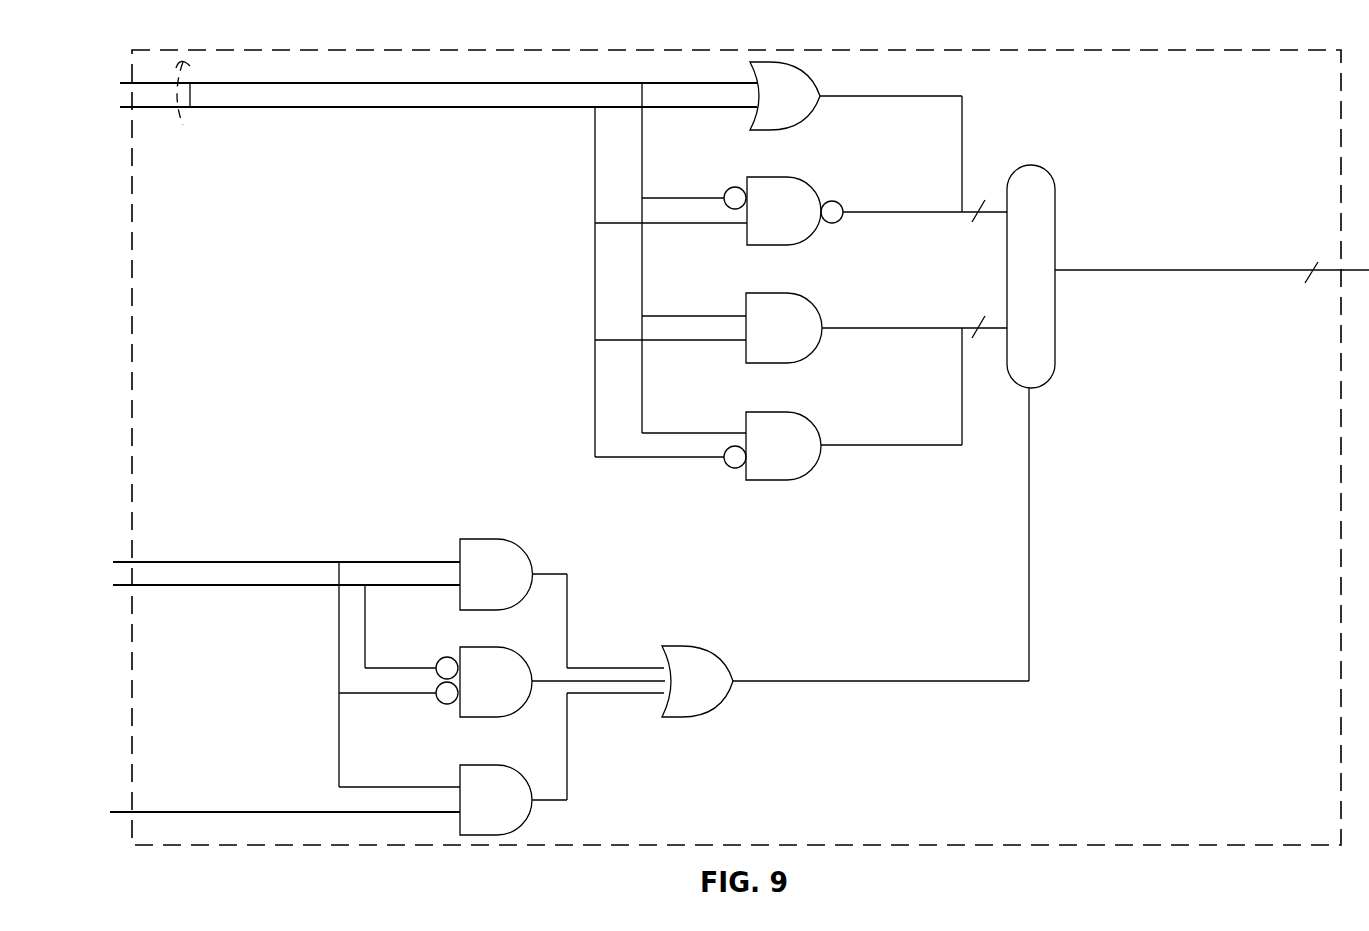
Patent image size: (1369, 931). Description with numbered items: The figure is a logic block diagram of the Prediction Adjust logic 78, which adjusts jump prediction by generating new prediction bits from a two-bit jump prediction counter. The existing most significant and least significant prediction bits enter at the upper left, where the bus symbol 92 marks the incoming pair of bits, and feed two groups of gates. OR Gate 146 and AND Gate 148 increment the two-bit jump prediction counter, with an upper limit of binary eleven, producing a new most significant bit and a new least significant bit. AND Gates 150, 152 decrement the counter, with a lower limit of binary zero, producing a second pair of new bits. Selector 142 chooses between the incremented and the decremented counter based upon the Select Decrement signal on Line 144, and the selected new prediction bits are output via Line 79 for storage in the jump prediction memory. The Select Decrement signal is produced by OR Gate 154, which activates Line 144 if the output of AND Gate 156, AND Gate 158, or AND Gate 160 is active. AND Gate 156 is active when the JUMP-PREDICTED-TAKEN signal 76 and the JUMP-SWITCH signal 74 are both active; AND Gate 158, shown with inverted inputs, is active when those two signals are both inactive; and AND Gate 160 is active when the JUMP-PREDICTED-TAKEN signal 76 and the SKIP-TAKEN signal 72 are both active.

The Prediction Adjust logic 78 is at (131, 166).
The prediction bit bus 92 is at (175, 126).
The OR Gate 146 is at (782, 131).
The AND Gate 148 is at (781, 176).
The AND Gate 150 is at (781, 364).
The AND Gate 152 is at (781, 411).
The Selector 142 is at (1029, 166).
The Line 79 is at (1218, 272).
The Line 144 is at (1028, 539).
The OR Gate 154 is at (697, 646).
The AND Gate 156 is at (493, 540).
The AND Gate 158 is at (493, 647).
The AND Gate 160 is at (493, 765).
The JUMP-PREDICTED-TAKEN signal 76 is at (144, 562).
The JUMP-SWITCH signal 74 is at (204, 586).
The SKIP-TAKEN signal 72 is at (371, 811).